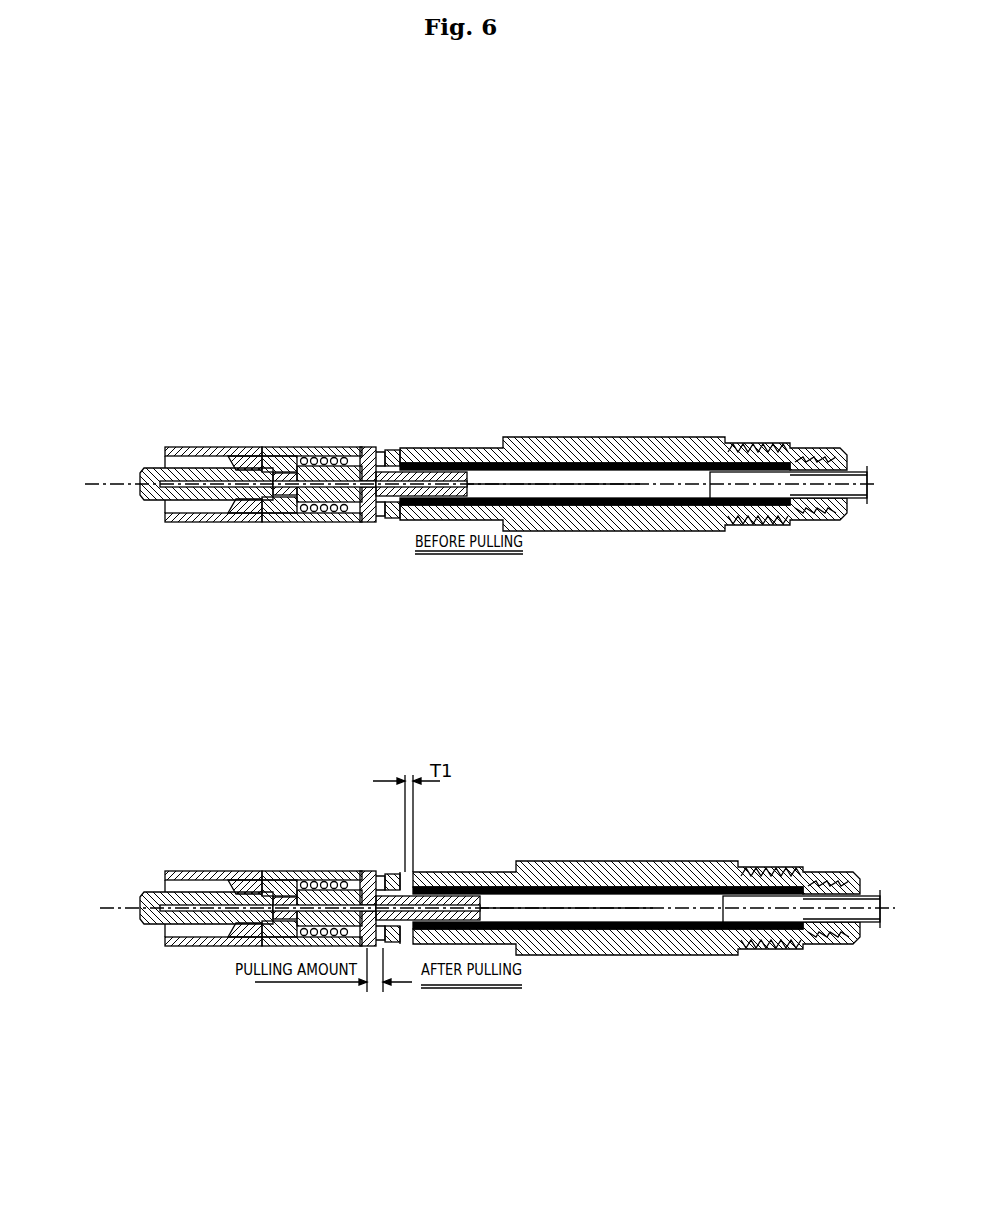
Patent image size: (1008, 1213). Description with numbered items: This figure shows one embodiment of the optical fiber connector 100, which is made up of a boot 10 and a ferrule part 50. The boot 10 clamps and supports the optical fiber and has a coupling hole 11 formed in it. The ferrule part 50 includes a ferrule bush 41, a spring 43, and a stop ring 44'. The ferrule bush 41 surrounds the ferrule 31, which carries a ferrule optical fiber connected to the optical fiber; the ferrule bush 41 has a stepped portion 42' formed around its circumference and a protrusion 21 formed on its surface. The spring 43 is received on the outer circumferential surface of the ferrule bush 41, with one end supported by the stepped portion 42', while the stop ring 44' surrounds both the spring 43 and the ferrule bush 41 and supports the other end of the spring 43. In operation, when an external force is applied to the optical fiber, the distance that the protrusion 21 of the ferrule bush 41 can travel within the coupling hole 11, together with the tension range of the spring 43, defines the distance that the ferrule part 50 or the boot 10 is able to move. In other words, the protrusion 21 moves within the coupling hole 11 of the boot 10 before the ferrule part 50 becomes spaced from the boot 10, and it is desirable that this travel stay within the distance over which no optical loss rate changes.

The optical fiber connector 100 is at (160, 293).
The ferrule part 50 is at (168, 437).
The ferrule 31 is at (188, 447).
The stepped portion 42' is at (304, 669).
The spring 43 is at (310, 449).
The stop ring 44' is at (324, 648).
The ferrule bush 41 is at (346, 449).
The coupling hole 11 is at (373, 449).
The protrusion 21 is at (395, 449).
The boot 10 is at (702, 442).